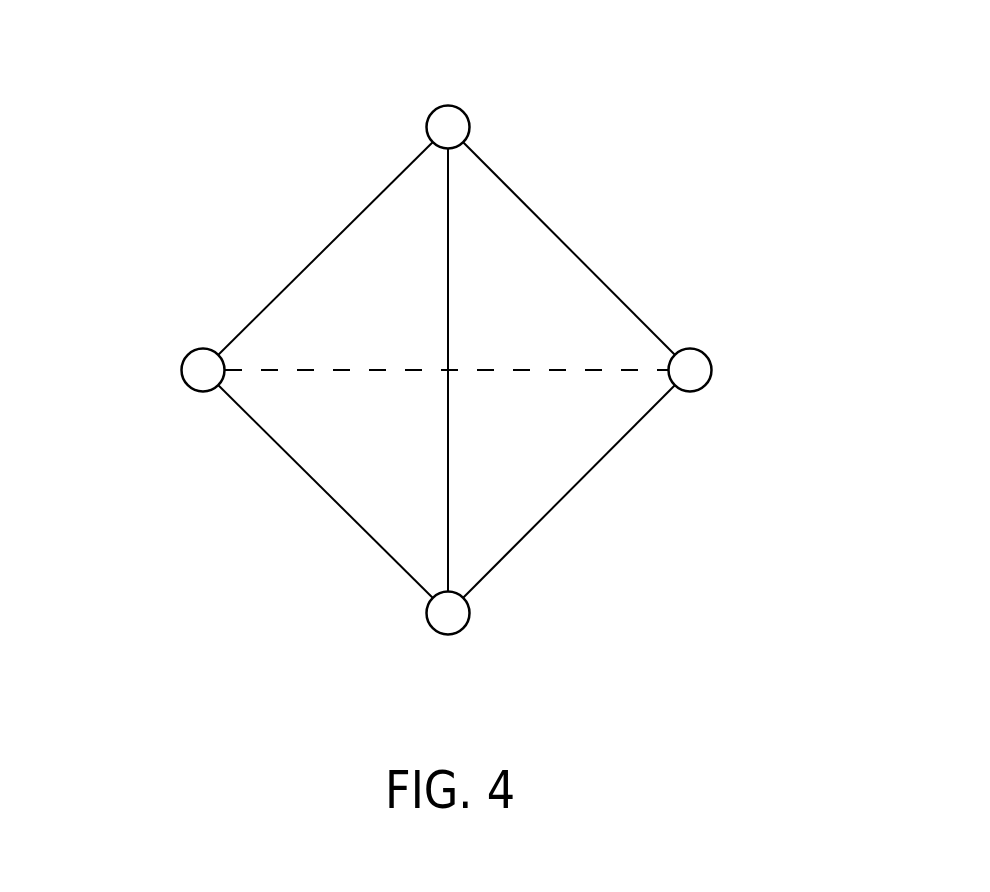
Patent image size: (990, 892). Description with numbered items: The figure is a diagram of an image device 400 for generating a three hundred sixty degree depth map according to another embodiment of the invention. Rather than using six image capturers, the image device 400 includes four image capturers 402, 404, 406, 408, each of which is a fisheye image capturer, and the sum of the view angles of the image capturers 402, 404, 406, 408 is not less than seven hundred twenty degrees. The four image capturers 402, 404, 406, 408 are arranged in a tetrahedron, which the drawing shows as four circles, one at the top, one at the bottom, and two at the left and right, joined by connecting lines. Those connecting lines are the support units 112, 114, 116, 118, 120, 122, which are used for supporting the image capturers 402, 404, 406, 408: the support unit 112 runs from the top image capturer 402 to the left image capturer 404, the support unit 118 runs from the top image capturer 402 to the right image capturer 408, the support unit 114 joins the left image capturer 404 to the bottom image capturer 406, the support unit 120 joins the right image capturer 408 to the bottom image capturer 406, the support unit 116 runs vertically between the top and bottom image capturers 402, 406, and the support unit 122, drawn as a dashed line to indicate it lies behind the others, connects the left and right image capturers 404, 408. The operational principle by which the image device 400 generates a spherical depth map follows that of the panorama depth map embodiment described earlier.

The image device 400 is at (798, 146).
The image capturer 402 is at (445, 104).
The image capturer 404 is at (203, 347).
The image capturer 406 is at (465, 632).
The image capturer 408 is at (690, 349).
The support unit 112 is at (325, 247).
The support unit 114 is at (324, 493).
The support unit 116 is at (449, 512).
The support unit 118 is at (569, 247).
The support unit 120 is at (570, 493).
The support unit 122 is at (552, 370).